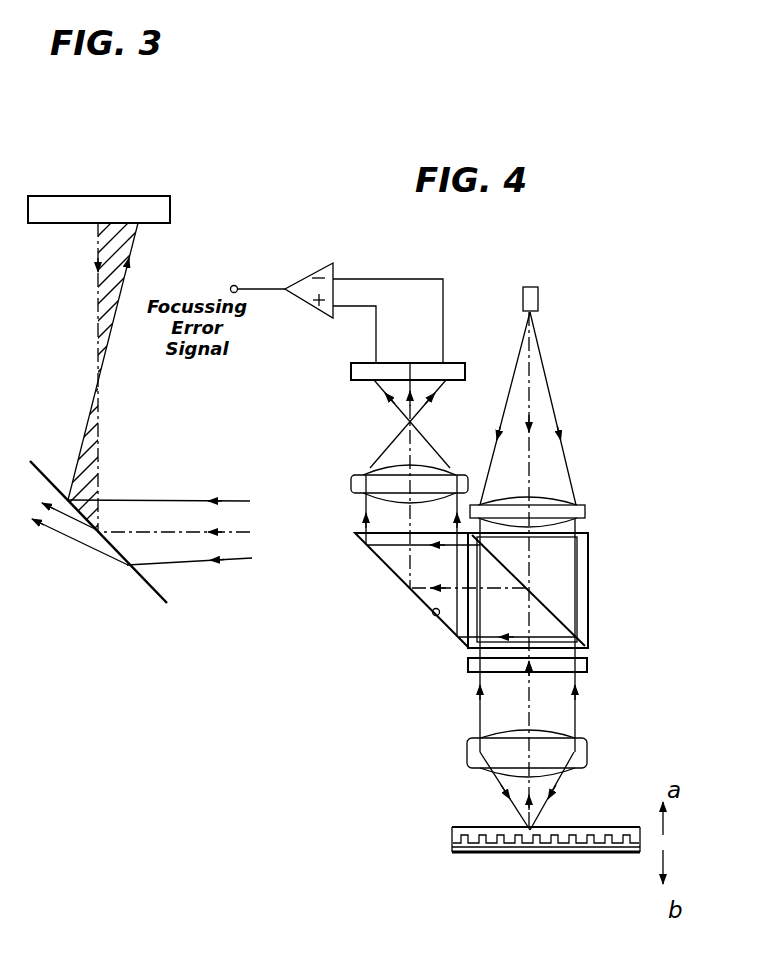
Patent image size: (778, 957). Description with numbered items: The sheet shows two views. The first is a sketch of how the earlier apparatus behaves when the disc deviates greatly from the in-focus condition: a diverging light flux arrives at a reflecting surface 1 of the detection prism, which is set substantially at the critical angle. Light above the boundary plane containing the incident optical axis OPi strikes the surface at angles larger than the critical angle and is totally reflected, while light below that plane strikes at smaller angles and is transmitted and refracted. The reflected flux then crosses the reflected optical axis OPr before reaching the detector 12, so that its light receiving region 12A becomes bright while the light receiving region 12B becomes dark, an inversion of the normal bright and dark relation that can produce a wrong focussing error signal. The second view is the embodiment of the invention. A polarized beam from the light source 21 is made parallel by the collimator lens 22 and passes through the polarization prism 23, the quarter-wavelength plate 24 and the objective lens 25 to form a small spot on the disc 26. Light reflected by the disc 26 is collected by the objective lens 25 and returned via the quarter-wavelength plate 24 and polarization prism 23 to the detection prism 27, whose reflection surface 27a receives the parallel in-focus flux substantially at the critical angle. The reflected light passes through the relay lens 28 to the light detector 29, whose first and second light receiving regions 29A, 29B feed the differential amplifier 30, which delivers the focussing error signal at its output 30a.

In FIG. 3, the reflecting mirror 1 is at (36, 477).
In FIG. 3, the detector 12 is at (98, 195).
In FIG. 3, the light receiving region 12A is at (160, 196).
In FIG. 3, the light receiving region 12B is at (50, 196).
In FIG. 3, the optical axis OPr is at (99, 428).
In FIG. 3, the optical axis OPi is at (178, 533).
In FIG. 4, the light source 21 is at (538, 294).
In FIG. 4, the collimator lens 22 is at (586, 509).
In FIG. 4, the polarization prism 23 is at (588, 584).
In FIG. 4, the quarter-wavelength plate 24 is at (588, 666).
In FIG. 4, the objective lens 25 is at (588, 756).
In FIG. 4, the disc 26 is at (595, 853).
In FIG. 4, the detection prism 27 is at (402, 562).
In FIG. 4, the reflection surface 27a is at (433, 614).
In FIG. 4, the relay lens 28 is at (352, 479).
In FIG. 4, the light detector 29 is at (367, 382).
In FIG. 4, the first light receiving region 29A is at (362, 363).
In FIG. 4, the second light receiving region 29B is at (466, 363).
In FIG. 4, the differential amplifier 30 is at (310, 276).
In FIG. 4, the output 30a is at (237, 284).